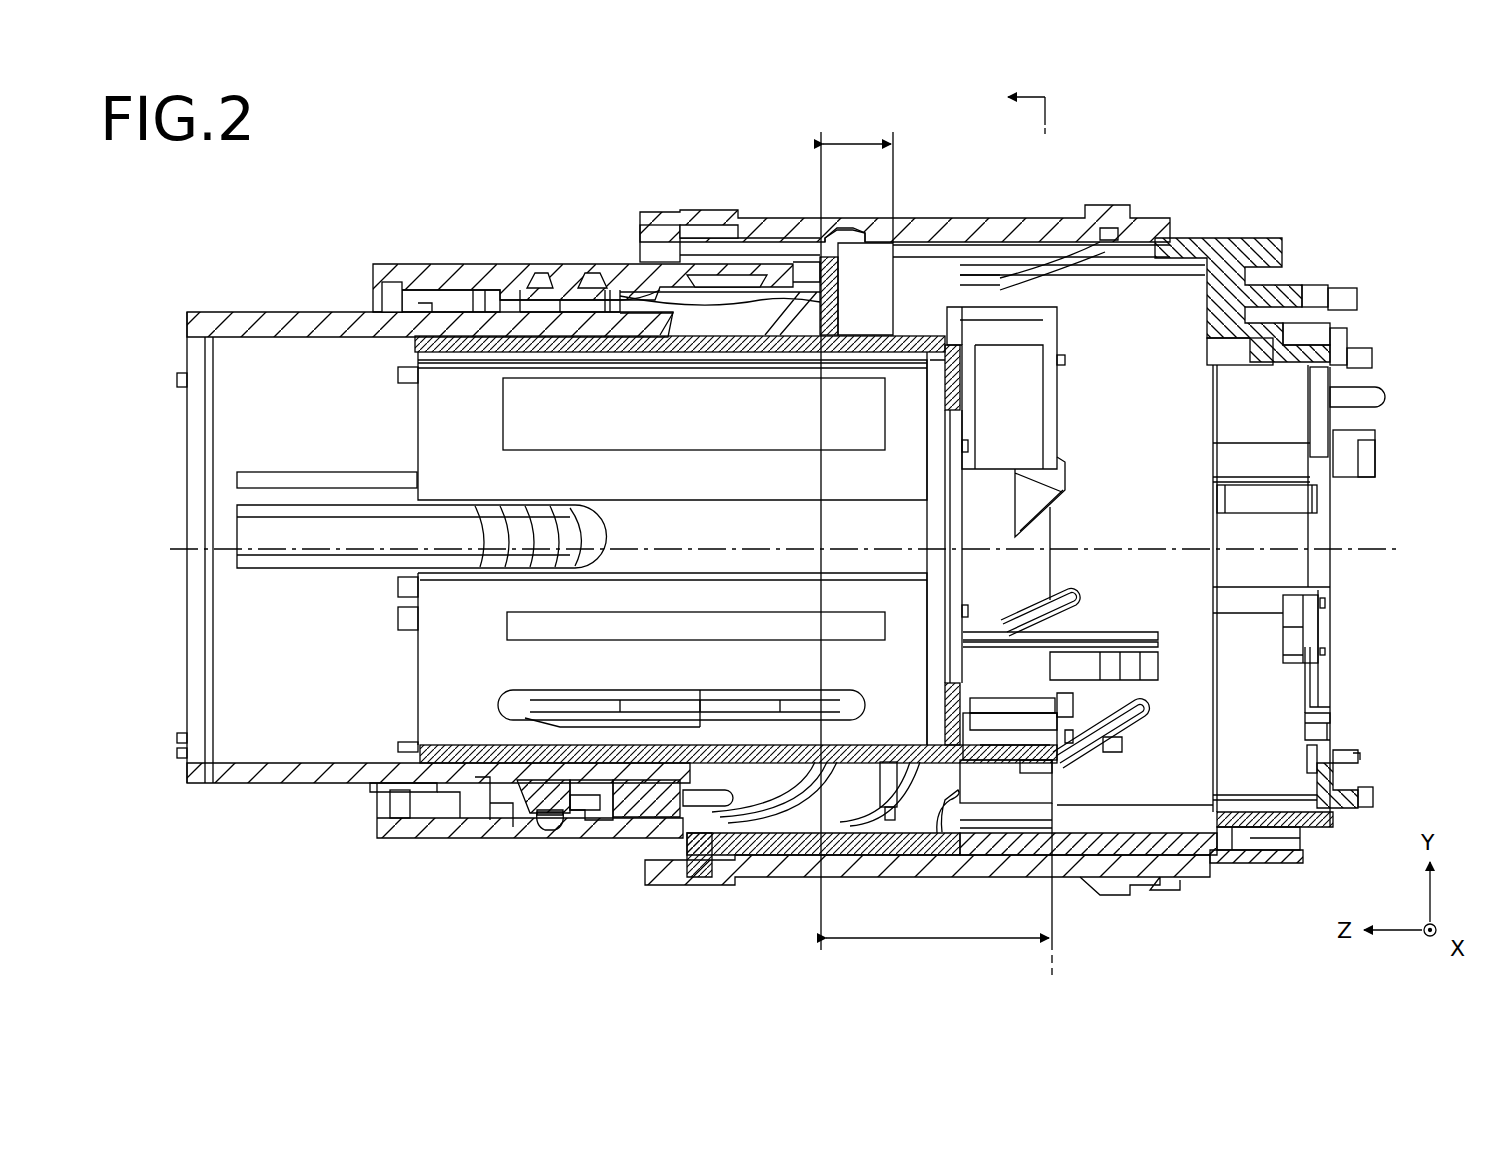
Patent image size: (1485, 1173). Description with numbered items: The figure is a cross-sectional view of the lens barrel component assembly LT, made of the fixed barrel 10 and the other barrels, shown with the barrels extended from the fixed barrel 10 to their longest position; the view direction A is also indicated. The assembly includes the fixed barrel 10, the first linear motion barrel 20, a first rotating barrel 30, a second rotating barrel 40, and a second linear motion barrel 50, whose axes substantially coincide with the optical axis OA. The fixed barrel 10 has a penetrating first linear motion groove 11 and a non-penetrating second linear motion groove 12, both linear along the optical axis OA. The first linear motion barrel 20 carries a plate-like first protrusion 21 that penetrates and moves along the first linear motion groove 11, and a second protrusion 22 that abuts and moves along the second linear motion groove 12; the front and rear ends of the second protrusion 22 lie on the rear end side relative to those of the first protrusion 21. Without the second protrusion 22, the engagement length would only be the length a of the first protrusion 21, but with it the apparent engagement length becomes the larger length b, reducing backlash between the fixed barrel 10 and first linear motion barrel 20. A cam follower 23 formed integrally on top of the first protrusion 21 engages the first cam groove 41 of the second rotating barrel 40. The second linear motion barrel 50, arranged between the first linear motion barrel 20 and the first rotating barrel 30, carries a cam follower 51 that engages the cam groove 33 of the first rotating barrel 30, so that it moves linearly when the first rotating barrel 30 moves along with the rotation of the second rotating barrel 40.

The fixed barrel 10 is at (1238, 236).
The first linear motion groove 11 is at (1032, 243).
The second linear motion groove 12 is at (1098, 828).
The first linear motion barrel 20 is at (425, 345).
The first protrusion 21 is at (853, 290).
The second protrusion 22 is at (1045, 327).
The cam follower 23 is at (840, 233).
The first rotating barrel 30 is at (432, 262).
The cam groove 33 is at (572, 830).
The second rotating barrel 40 is at (998, 214).
The first cam groove 41 is at (872, 226).
The second linear motion barrel 50 is at (268, 312).
The cam follower 51 is at (550, 832).
The optical axis OA is at (1380, 542).
The lens barrel component assembly LT is at (1152, 146).
The length of the first protrusion a is at (857, 535).
The apparent engagement length b is at (939, 889).
The view direction A is at (1011, 110).